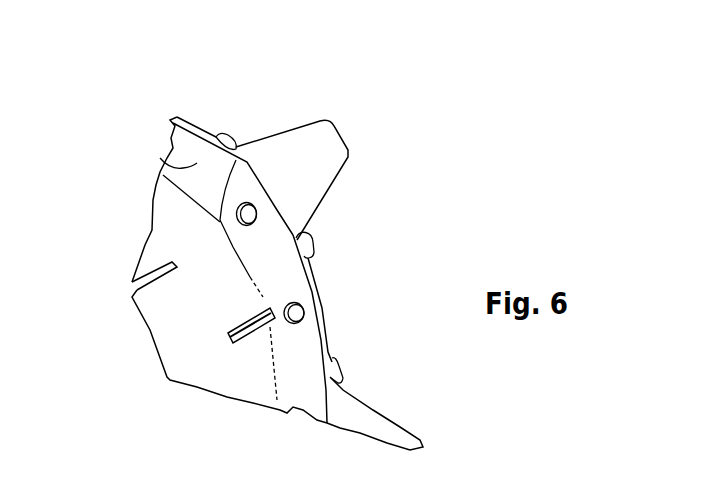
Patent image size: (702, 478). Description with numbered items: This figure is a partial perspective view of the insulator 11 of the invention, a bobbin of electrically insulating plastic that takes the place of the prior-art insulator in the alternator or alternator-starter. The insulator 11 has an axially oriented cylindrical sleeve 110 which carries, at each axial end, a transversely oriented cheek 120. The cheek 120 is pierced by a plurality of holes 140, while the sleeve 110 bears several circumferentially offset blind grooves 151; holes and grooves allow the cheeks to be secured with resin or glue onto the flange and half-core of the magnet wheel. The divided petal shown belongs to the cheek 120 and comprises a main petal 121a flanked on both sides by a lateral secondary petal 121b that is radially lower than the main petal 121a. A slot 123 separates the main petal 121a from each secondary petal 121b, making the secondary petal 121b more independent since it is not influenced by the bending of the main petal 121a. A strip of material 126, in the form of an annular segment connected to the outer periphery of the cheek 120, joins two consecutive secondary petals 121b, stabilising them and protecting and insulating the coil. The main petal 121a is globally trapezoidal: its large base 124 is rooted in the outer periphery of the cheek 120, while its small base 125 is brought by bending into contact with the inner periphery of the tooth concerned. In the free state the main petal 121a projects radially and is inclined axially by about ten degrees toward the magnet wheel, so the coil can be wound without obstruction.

The insulator 11 is at (141, 205).
The cylindrical sleeve 110 is at (173, 312).
The cheek 120 is at (166, 159).
The main petal 121a is at (320, 160).
The lateral secondary petal 121b is at (226, 137).
The slot 123 is at (236, 146).
The large base 124 is at (217, 215).
The small base 125 is at (338, 130).
The strip of material 126 is at (193, 123).
The hole 140 is at (304, 313).
The blind groove 151 is at (157, 273).